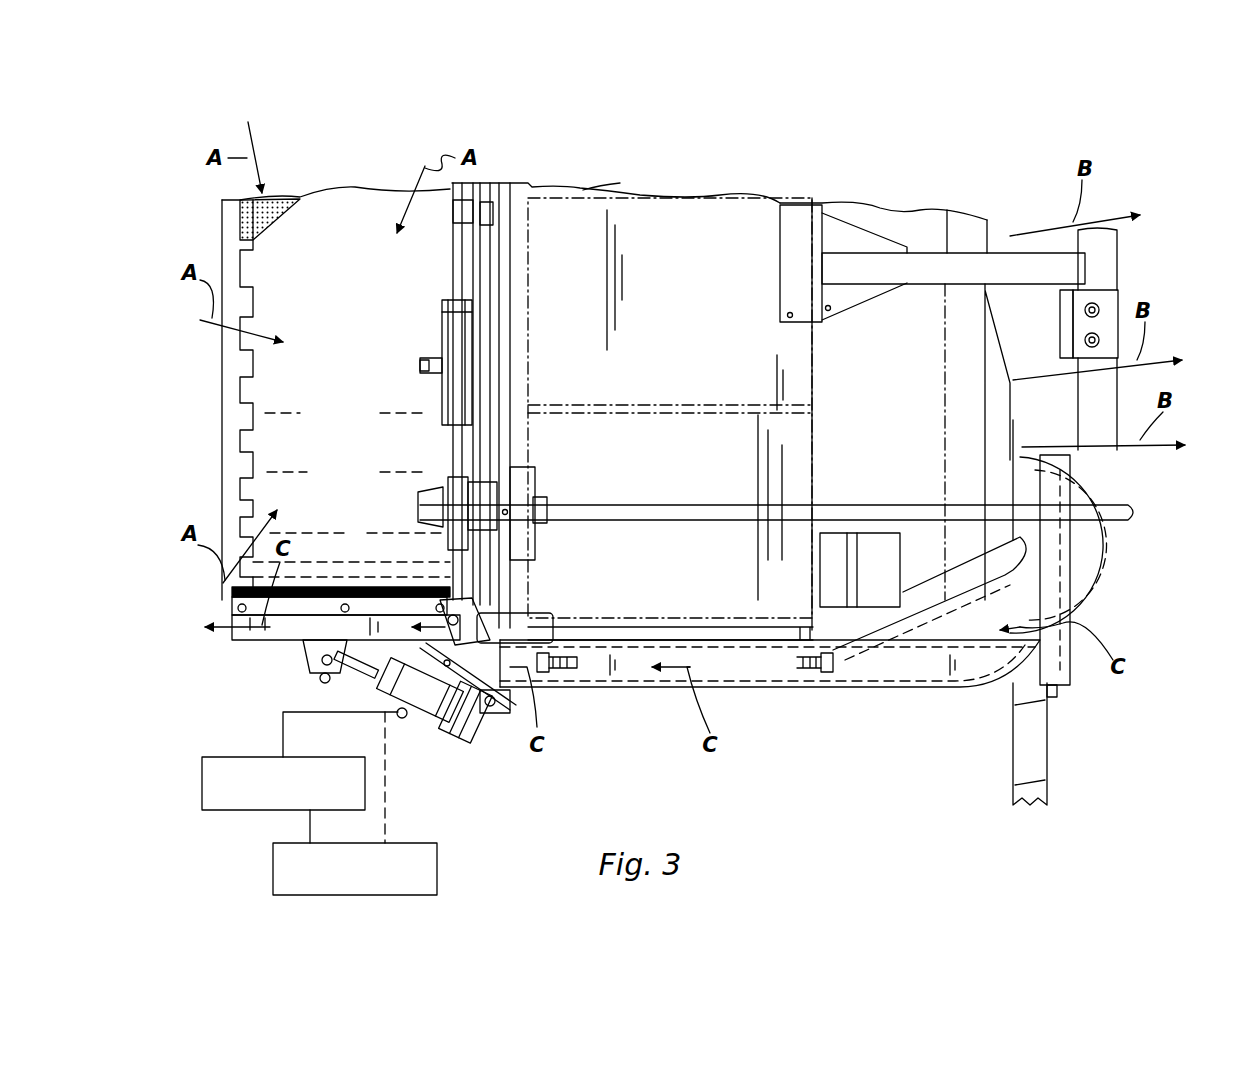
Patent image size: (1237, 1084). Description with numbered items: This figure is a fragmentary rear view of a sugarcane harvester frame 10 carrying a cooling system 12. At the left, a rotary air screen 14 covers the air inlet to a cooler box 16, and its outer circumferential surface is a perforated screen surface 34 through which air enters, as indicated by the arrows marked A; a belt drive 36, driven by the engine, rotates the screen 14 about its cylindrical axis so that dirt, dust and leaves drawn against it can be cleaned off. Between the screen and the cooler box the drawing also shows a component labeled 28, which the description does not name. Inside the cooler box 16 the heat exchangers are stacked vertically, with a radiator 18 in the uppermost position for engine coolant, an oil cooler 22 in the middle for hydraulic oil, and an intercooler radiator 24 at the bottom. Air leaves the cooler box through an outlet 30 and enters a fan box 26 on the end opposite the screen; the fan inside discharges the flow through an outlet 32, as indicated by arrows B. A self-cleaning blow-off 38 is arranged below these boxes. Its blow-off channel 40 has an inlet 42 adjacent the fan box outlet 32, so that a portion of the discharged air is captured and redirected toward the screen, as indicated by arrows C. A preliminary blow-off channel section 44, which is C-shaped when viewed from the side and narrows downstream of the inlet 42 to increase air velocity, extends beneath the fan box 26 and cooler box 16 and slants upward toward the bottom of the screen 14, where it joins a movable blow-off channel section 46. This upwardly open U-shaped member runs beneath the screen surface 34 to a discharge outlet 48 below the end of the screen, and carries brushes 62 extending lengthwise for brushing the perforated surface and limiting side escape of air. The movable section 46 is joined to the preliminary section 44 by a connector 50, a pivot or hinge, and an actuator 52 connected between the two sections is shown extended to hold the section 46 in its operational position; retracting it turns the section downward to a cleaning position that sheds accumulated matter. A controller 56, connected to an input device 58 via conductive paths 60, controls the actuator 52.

The sugarcane harvester frame 10 is at (1135, 787).
The cooling system 12 is at (222, 247).
The rotary air screen 14 is at (350, 193).
The cooler box 16 is at (555, 185).
The radiator 18 is at (583, 190).
The oil cooler 22 is at (817, 435).
The intercooler radiator 24 is at (820, 547).
The fan box 26 is at (993, 230).
The vertical rails 28 is at (500, 265).
The outlet 30 is at (835, 237).
The outlet 32 is at (977, 322).
The perforated screen surface 34 is at (285, 200).
The belt drive 36 is at (443, 385).
The self-cleaning blow-off 38 is at (228, 650).
The blow-off channel 40 is at (637, 690).
The inlet 42 is at (1000, 462).
The preliminary blow-off channel section 44 is at (1092, 590).
The movable blow-off channel section 46 is at (273, 643).
The discharge outlet 48 is at (230, 635).
The connector 50 is at (422, 725).
The actuator 52 is at (462, 750).
The controller 56 is at (225, 757).
The input device 58 is at (272, 866).
The conductive paths 60 is at (283, 737).
The brushes 62 is at (322, 587).